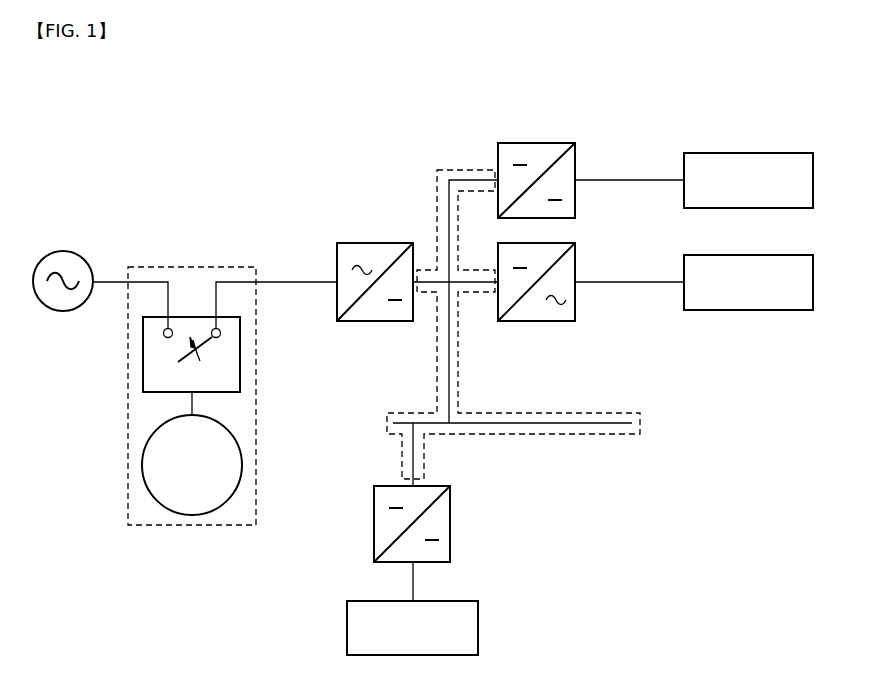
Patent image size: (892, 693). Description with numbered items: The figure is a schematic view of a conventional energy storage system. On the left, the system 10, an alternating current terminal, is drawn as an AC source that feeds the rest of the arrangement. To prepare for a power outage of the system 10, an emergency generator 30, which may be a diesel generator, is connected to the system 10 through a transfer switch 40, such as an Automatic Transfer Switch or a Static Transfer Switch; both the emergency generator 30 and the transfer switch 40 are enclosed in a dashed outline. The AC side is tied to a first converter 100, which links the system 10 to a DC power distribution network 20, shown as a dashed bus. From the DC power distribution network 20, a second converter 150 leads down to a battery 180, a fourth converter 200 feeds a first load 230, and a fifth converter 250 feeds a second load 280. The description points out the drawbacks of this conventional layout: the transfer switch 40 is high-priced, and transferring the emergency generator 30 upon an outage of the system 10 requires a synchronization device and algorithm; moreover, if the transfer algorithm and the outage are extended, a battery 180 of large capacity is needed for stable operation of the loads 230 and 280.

The system 10 is at (63, 251).
The DC power distribution network 20 is at (452, 170).
The emergency generator 30 is at (142, 465).
The transfer switch 40 is at (143, 355).
The first converter 100 is at (375, 243).
The second converter 150 is at (374, 523).
The battery 180 is at (347, 628).
The fourth converter 200 is at (537, 321).
The first load 230 is at (750, 310).
The fifth converter 250 is at (537, 143).
The second load 280 is at (748, 153).